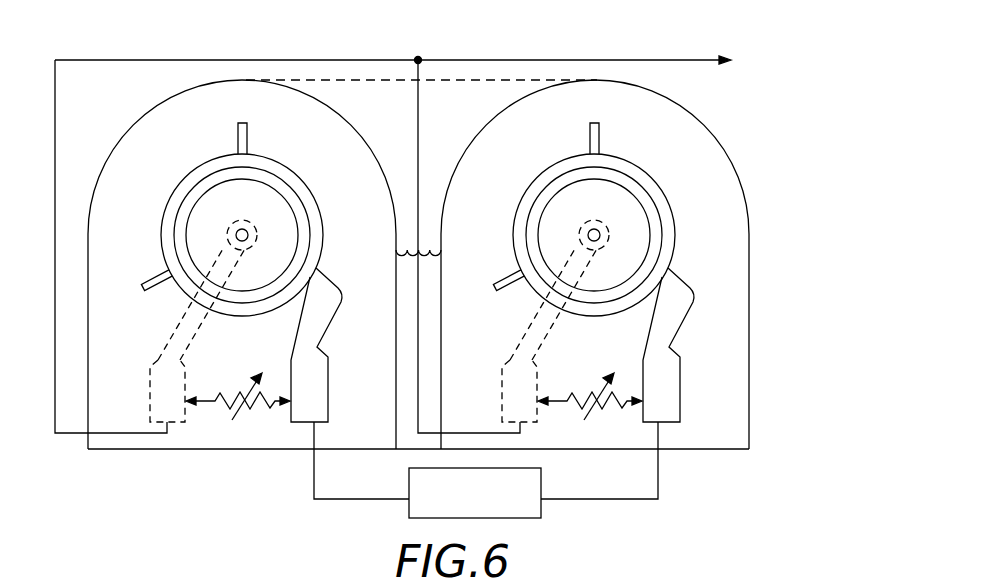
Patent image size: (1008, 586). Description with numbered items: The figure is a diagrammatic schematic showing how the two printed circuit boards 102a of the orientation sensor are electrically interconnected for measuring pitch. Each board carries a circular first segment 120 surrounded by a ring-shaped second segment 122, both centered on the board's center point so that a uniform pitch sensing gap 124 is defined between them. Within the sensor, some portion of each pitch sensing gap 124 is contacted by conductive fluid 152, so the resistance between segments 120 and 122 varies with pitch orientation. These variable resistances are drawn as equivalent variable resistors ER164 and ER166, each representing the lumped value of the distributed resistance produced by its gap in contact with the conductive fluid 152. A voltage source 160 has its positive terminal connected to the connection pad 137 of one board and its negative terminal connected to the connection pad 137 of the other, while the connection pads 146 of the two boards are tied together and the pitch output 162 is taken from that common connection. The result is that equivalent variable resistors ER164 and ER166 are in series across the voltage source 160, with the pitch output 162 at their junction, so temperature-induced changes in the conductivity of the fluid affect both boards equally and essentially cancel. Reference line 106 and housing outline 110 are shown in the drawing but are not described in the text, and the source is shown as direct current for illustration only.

The printed circuit board 102a is at (230, 70).
The reference line 106 is at (389, 78).
The roller housing 110 is at (342, 102).
The first segment 120 is at (220, 200).
The second segment 122 is at (200, 167).
The pitch sensing gap 124 is at (180, 220).
The connection pad 137 is at (302, 422).
The connection pad 146 is at (172, 422).
The conductive fluid 152 is at (413, 246).
The voltage source 160 is at (500, 506).
The pitch output 162 is at (645, 58).
The equivalent variable resistor ER164 is at (220, 393).
The equivalent variable resistor ER166 is at (572, 393).